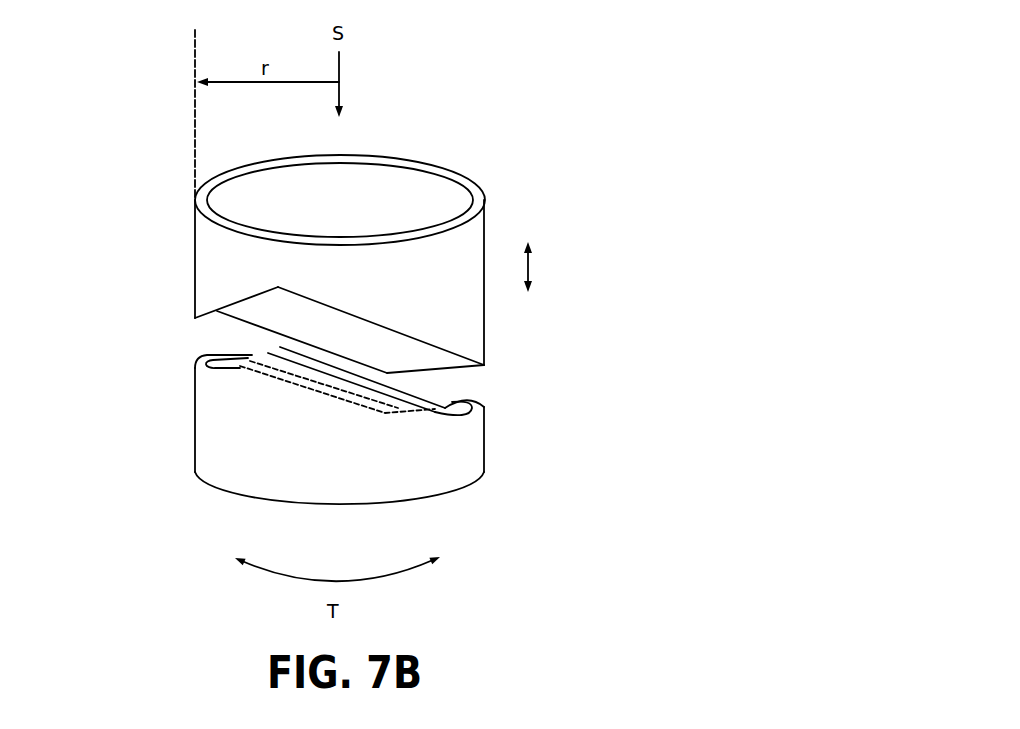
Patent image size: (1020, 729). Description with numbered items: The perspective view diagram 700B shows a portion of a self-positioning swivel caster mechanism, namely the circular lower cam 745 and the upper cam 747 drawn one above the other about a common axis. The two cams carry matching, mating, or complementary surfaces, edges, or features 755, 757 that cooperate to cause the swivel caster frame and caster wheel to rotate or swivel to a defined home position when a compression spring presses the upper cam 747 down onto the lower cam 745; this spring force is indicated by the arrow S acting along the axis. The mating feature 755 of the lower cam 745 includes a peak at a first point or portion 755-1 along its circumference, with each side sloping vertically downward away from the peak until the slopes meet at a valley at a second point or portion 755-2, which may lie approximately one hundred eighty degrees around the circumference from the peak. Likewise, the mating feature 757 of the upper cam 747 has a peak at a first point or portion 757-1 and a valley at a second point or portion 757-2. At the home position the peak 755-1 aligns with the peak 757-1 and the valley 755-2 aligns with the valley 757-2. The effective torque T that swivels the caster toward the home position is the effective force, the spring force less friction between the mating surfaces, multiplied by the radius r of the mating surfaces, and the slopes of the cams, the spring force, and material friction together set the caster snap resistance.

The perspective view diagram 700B is at (594, 68).
The upper cam 747 is at (486, 226).
The mating surface of upper cam 757 is at (413, 331).
The first point or portion (peak) of upper cam 757-1 is at (267, 291).
The second point or portion (valley) of upper cam 757-2 is at (379, 363).
The lower cam 745 is at (485, 445).
The mating surface of lower cam 755 is at (410, 392).
The first point or portion (peak) of lower cam 755-1 is at (266, 346).
The second point or portion (valley) of lower cam 755-2 is at (368, 426).